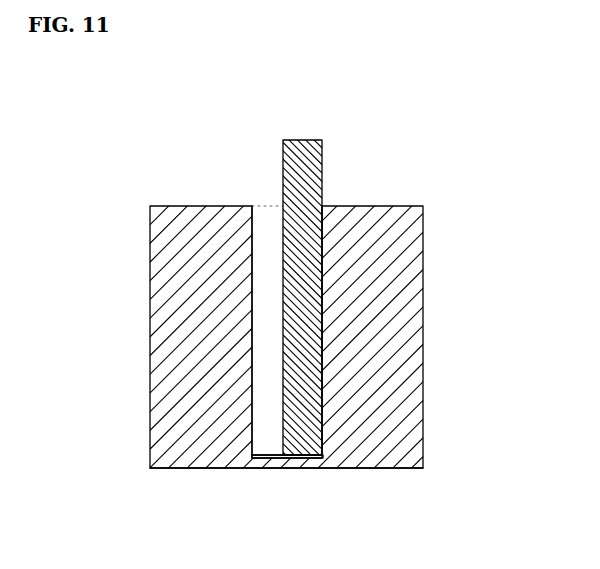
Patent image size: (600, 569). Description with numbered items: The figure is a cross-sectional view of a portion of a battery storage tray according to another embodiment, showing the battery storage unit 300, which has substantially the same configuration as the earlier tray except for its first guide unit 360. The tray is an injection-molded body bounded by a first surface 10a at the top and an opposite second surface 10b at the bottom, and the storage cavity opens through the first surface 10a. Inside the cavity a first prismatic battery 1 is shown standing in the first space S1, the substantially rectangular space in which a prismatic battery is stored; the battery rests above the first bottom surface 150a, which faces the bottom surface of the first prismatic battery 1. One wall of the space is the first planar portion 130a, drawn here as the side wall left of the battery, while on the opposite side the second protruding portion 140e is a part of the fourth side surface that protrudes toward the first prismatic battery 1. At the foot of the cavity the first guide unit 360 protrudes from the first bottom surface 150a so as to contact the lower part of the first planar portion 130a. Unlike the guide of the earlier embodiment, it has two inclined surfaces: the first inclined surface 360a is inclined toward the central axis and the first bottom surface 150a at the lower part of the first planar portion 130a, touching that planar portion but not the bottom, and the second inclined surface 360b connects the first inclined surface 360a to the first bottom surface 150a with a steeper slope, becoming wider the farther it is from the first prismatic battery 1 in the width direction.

The battery storage unit 300 is at (104, 155).
The first prismatic battery 1 is at (305, 140).
The first surface 10a is at (412, 206).
The second surface 10b is at (412, 468).
The first planar portion 130a is at (254, 226).
The first space S1 is at (265, 199).
The second protruding portion 140e is at (318, 237).
The first guide unit 360 is at (265, 463).
The first inclined surface 360a is at (260, 456).
The second inclined surface 360b is at (284, 455).
The first bottom surface 150a is at (320, 458).